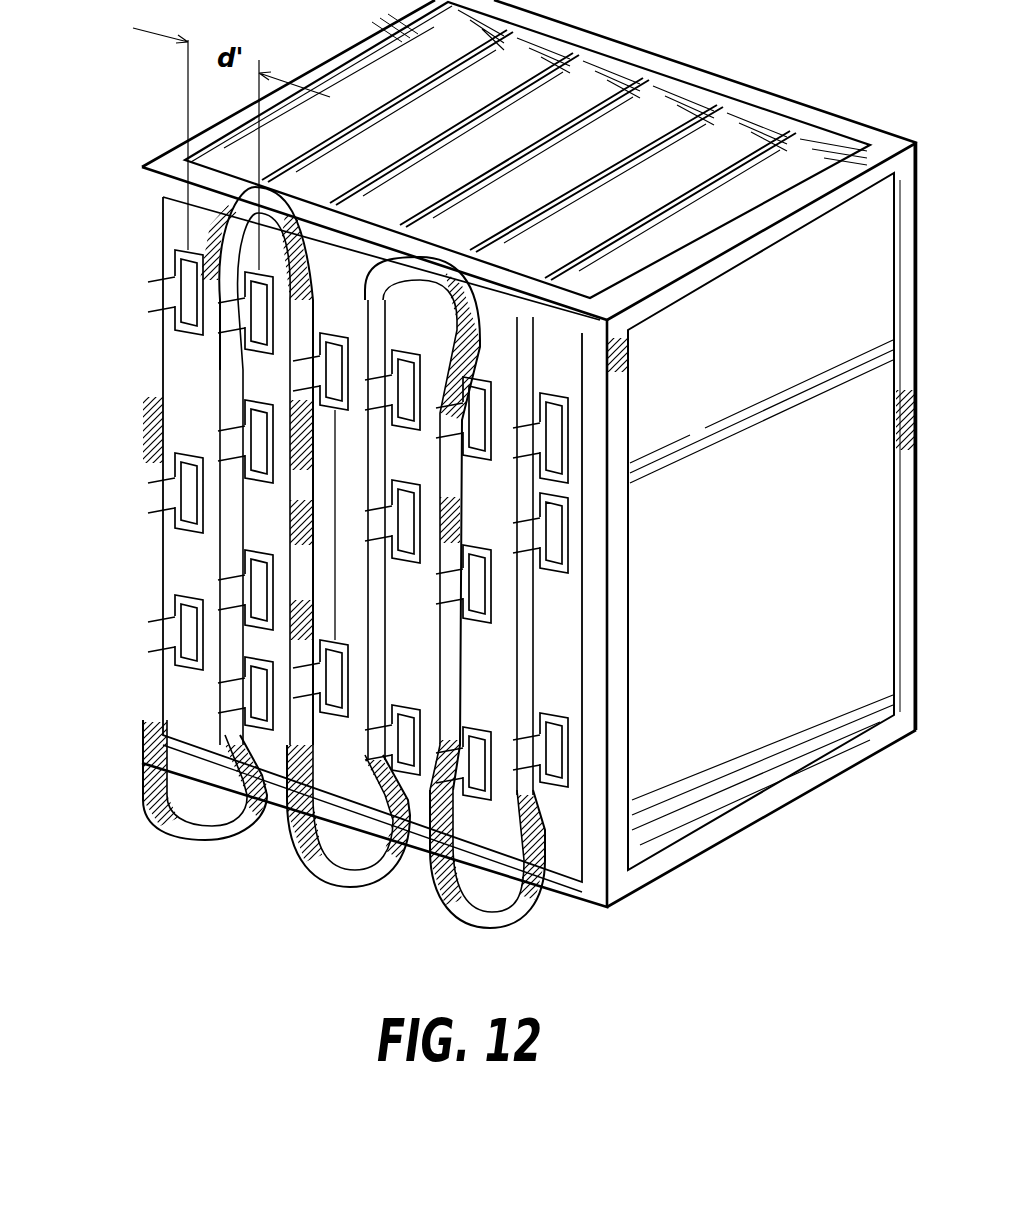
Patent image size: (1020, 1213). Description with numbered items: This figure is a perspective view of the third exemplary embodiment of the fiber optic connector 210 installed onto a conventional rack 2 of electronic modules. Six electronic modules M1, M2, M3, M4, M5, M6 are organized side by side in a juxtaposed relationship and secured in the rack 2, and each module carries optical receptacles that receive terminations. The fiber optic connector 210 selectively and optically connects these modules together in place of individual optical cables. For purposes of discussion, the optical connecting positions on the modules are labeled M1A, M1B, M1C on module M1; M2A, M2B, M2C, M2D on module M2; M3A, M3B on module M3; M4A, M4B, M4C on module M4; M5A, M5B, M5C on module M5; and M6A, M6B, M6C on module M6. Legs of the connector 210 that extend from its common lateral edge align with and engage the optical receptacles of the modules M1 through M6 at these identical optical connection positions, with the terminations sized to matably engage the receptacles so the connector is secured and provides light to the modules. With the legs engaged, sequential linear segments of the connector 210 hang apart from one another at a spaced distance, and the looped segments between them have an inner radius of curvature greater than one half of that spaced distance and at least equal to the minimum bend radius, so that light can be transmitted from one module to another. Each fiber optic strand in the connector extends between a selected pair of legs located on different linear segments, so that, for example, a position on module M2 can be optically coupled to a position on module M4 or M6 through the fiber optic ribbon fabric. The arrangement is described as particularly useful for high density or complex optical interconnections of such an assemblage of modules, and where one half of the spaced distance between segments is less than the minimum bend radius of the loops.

The rack 2 is at (356, 52).
The fiber optic connector 210 is at (128, 305).
The electronic module M1 is at (165, 214).
The electronic module M2 is at (336, 194).
The electronic module M3 is at (406, 214).
The electronic module M4 is at (476, 236).
The electronic module M5 is at (546, 266).
The electronic module M6 is at (618, 291).
The optical connecting position M1A is at (177, 334).
The optical connecting position M1B is at (177, 466).
The optical connecting position M1C is at (175, 622).
The optical connecting position M2A is at (280, 340).
The optical connecting position M2B is at (260, 484).
The optical connecting position M2C is at (278, 583).
The optical connecting position M2D is at (253, 723).
The optical connecting position M3A is at (336, 333).
The optical connecting position M3B is at (330, 718).
The optical connecting position M4A is at (406, 352).
The optical connecting position M4B is at (408, 565).
The optical connecting position M4C is at (412, 706).
The optical connecting position M5A is at (476, 458).
The optical connecting position M5B is at (472, 622).
The optical connecting position M5C is at (485, 728).
The optical connecting position M6A is at (570, 432).
The optical connecting position M6B is at (570, 556).
The optical connecting position M6C is at (570, 746).